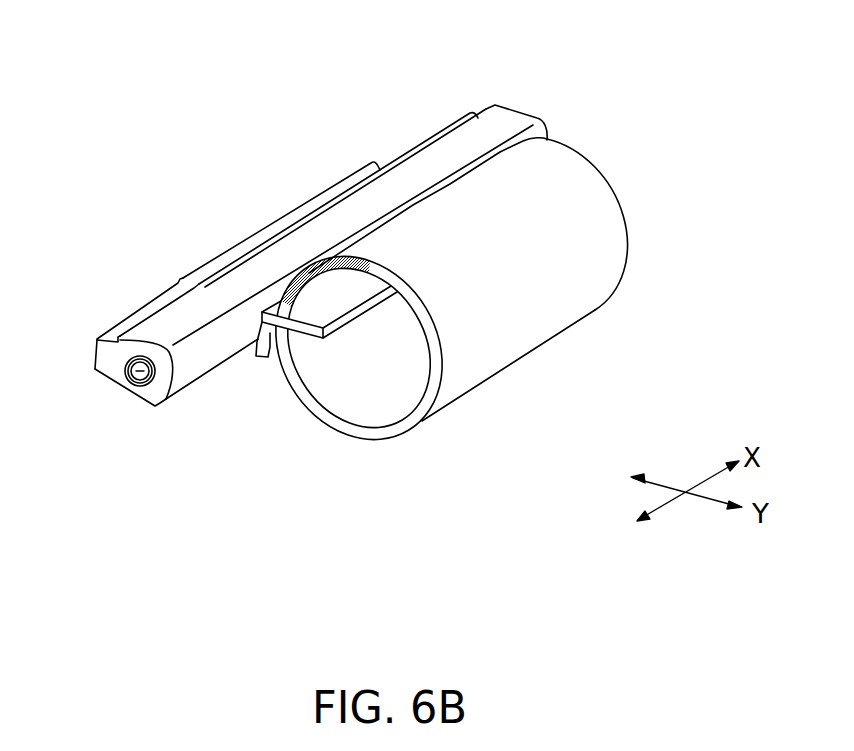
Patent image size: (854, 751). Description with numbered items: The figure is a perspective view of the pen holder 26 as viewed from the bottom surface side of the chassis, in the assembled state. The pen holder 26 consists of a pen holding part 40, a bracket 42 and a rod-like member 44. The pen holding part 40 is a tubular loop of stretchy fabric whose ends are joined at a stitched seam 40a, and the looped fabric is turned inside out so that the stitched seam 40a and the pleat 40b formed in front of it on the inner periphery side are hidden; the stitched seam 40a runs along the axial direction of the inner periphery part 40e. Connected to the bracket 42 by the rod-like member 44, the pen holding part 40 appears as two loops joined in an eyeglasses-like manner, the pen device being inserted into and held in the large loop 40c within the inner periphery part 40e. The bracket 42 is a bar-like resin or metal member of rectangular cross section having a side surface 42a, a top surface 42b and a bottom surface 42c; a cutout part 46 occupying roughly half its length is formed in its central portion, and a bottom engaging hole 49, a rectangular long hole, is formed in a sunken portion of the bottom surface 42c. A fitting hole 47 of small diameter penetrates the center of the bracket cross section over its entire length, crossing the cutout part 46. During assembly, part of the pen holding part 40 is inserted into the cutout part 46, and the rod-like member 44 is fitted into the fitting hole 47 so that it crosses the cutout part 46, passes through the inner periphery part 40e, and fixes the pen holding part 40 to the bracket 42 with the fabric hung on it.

The pen holder 26 is at (152, 139).
The pen holding part 40 is at (531, 381).
The stitched seam 40a is at (340, 280).
The pleat 40b is at (337, 287).
The large loop 40c is at (563, 300).
The inner periphery part 40e is at (392, 372).
The bracket 42 is at (347, 130).
The side surface 42a is at (202, 357).
The top surface 42b is at (133, 395).
The bottom surface 42c is at (442, 160).
The rod-like member 44 is at (140, 372).
The cutout part 46 is at (261, 347).
The fitting hole 47 is at (126, 366).
The bottom engaging hole 49 is at (282, 233).